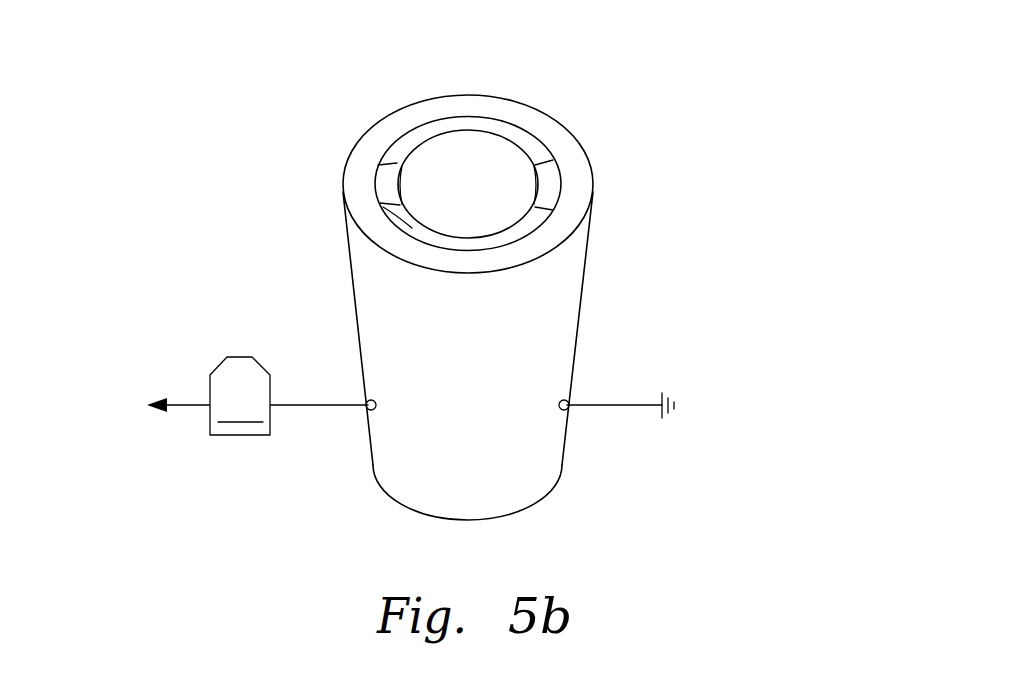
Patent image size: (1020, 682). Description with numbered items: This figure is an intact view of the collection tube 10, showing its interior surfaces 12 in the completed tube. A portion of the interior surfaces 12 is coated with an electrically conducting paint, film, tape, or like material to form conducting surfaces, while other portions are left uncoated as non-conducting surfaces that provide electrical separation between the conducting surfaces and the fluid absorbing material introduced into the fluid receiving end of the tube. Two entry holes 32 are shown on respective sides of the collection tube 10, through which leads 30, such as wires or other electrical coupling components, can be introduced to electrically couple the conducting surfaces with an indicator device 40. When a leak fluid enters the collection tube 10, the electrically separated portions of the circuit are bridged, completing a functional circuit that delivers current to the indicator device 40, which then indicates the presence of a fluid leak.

The collection tube 10 is at (130, 110).
The interior surfaces 12 is at (451, 134).
The leads 30 is at (332, 405).
The entry holes 32 is at (366, 409).
The indicator device 40 is at (240, 396).